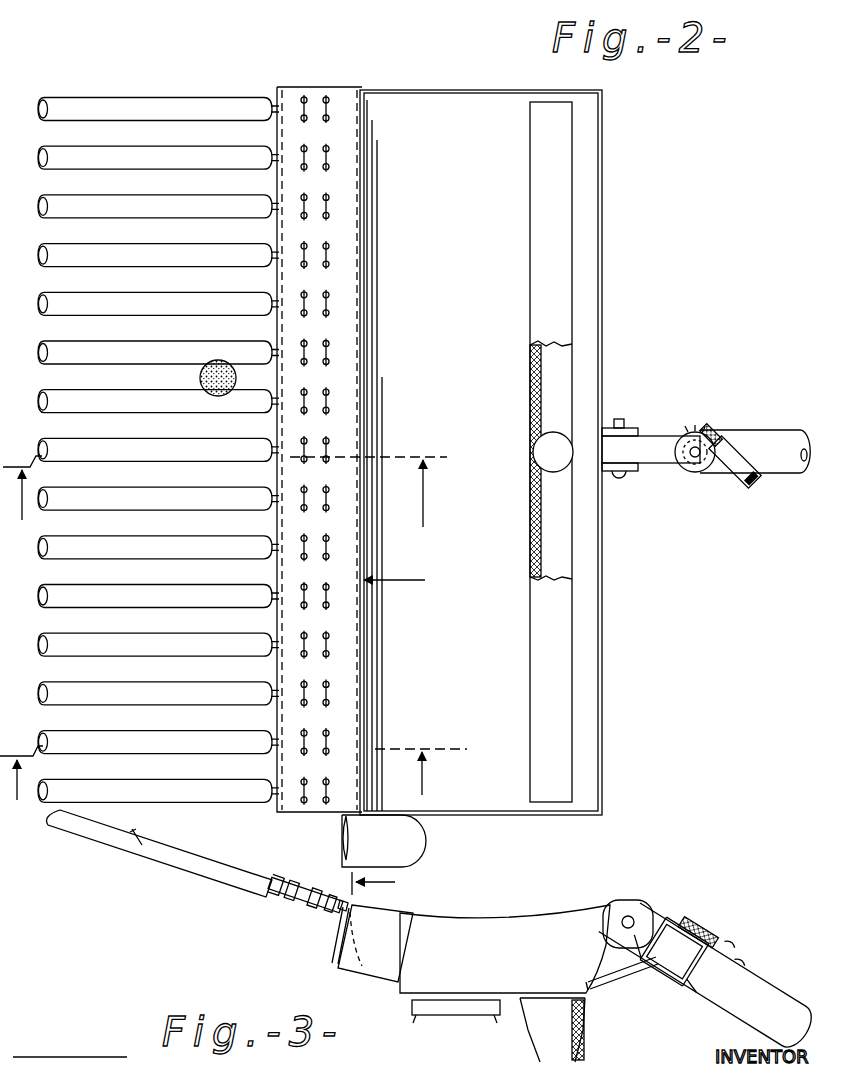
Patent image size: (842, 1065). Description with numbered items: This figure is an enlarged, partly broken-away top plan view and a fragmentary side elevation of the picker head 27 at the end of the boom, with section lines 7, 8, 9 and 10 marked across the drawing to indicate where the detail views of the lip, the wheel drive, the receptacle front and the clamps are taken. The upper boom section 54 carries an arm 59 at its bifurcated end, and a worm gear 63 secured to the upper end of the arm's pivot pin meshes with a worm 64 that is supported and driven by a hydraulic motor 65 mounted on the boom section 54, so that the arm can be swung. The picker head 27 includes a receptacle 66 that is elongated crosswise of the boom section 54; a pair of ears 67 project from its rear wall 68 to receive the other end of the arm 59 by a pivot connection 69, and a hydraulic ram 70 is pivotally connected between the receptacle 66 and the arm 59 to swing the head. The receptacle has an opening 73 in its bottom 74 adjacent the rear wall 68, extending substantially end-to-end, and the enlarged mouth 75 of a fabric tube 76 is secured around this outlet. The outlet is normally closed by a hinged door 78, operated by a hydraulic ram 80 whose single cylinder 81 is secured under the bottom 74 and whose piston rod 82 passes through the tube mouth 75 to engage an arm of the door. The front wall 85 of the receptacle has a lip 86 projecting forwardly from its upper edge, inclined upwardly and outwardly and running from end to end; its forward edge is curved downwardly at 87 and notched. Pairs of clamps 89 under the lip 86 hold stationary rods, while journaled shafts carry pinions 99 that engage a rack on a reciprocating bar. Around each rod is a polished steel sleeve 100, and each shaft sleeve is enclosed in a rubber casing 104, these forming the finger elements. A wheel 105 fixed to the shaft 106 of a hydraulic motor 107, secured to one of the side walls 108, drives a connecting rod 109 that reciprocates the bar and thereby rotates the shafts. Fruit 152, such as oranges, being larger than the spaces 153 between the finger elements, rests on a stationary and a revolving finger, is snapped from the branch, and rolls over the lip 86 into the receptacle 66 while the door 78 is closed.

In FIG. 2, the section line 7- 7 is at (233, 784).
In FIG. 2, the section line 8- 8 is at (403, 581).
In FIG. 3, the section line 8- 8 is at (381, 883).
In FIG. 2, the section line 9- 9 is at (225, 501).
In FIG. 2, the section line 10- 10 is at (315, 863).
In FIG. 3, the section line 10- 10 is at (292, 933).
In FIG. 2, the picker head 27 is at (422, 88).
In FIG. 3, the picker head 27 is at (452, 905).
In FIG. 2, the upper boom section 54 is at (780, 432).
In FIG. 3, the upper boom section 54 is at (786, 996).
In FIG. 2, the arm 59 is at (660, 468).
In FIG. 3, the arm 59 is at (668, 926).
In FIG. 2, the worm gear 63 is at (692, 434).
In FIG. 3, the worm gear 63 is at (705, 927).
In FIG. 2, the worm 64 is at (715, 438).
In FIG. 2, the hydraulic motor 65 is at (742, 478).
In FIG. 3, the hydraulic motor 65 is at (742, 962).
In FIG. 2, the receptacle 66 is at (502, 800).
In FIG. 3, the receptacle 66 is at (577, 906).
In FIG. 2, the ears 67 is at (625, 430).
In FIG. 3, the ears 67 is at (606, 934).
In FIG. 2, the rear wall 68 is at (600, 605).
In FIG. 2, the pivot connection 69 is at (619, 480).
In FIG. 3, the pivot connection 69 is at (632, 916).
In FIG. 3, the hydraulic ram 70 is at (612, 973).
In FIG. 2, the opening 73 is at (578, 388).
In FIG. 2, the bottom 74 is at (463, 125).
In FIG. 2, the enlarged mouth 75 is at (555, 553).
In FIG. 3, the enlarged mouth 75 is at (582, 1024).
In FIG. 2, the fabric tube 76 is at (535, 458).
In FIG. 3, the fabric tube 76 is at (572, 1060).
In FIG. 2, the door 78 is at (570, 188).
In FIG. 3, the hydraulic ram 80 is at (452, 1004).
In FIG. 3, the cylinder 81 is at (478, 1018).
In FIG. 3, the piston rod 82 is at (514, 1000).
In FIG. 2, the front wall 85 is at (365, 420).
In FIG. 2, the lip 86 is at (316, 95).
In FIG. 3, the lip 86 is at (318, 878).
In FIG. 3, the downwardly curved edge 87 is at (282, 880).
In FIG. 3, the clamps 89 is at (322, 910).
In FIG. 3, the pinions 99 is at (348, 905).
In FIG. 2, the sleeve 100 is at (62, 308).
In FIG. 3, the sleeve 100 is at (146, 852).
In FIG. 2, the casing 104 is at (60, 730).
In FIG. 2, the wheel 105 is at (372, 846).
In FIG. 3, the wheel 105 is at (335, 964).
In FIG. 3, the shaft 106 is at (340, 915).
In FIG. 2, the hydraulic motor 107 is at (415, 852).
In FIG. 3, the hydraulic motor 107 is at (404, 962).
In FIG. 2, the side walls 108 is at (553, 815).
In FIG. 3, the side walls 108 is at (508, 915).
In FIG. 2, the connecting rod 109 is at (352, 836).
In FIG. 2, the fruit 152 is at (218, 360).
In FIG. 2, the spaces 153 is at (95, 130).